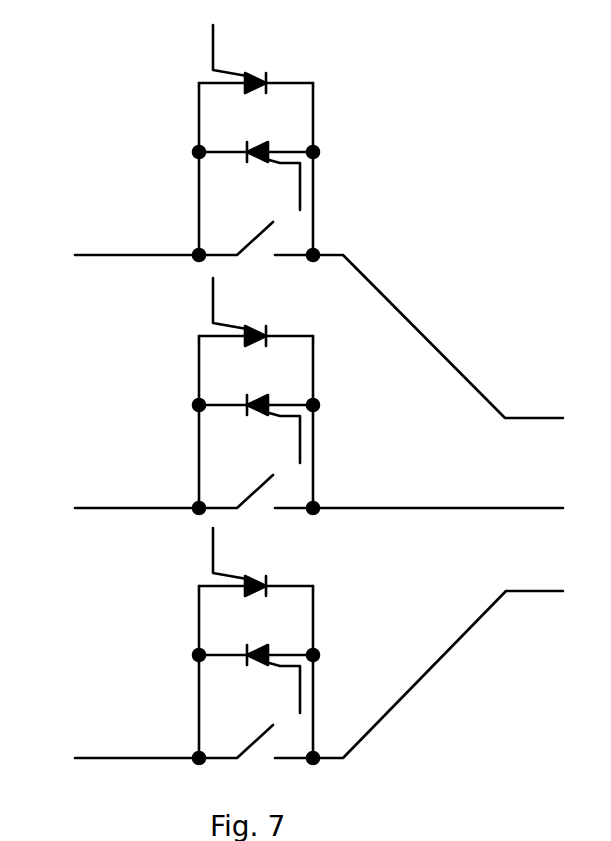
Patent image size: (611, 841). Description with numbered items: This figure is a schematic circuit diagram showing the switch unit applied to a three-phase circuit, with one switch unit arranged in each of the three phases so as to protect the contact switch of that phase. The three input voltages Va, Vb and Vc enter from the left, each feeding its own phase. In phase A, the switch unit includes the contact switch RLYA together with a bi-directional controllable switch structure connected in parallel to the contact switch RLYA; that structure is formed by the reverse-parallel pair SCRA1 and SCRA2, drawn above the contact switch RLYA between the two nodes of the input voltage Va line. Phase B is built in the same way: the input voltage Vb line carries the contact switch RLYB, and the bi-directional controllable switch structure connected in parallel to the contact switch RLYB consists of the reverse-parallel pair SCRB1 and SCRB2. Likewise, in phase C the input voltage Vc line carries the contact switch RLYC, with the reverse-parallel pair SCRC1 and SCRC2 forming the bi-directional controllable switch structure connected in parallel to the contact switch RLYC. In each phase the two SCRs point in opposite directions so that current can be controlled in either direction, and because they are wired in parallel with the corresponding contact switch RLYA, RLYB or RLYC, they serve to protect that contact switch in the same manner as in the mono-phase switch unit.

The silicon controlled rectifier SCRA1 is at (256, 76).
The silicon controlled rectifier SCRA2 is at (256, 176).
The contact switch RLYA is at (256, 252).
The silicon controlled rectifier SCRB1 is at (256, 329).
The silicon controlled rectifier SCRB2 is at (256, 429).
The contact switch RLYB is at (256, 505).
The silicon controlled rectifier SCRC1 is at (256, 579).
The silicon controlled rectifier SCRC2 is at (256, 679).
The contact switch RLYC is at (256, 755).
The input voltage Va is at (118, 247).
The input voltage Vb is at (123, 507).
The input voltage Vc is at (124, 756).